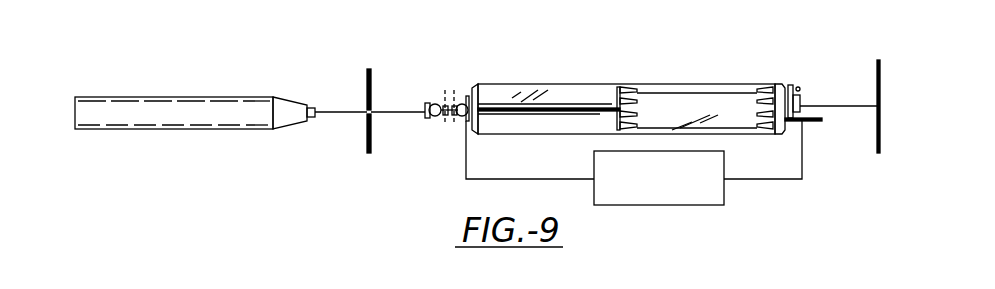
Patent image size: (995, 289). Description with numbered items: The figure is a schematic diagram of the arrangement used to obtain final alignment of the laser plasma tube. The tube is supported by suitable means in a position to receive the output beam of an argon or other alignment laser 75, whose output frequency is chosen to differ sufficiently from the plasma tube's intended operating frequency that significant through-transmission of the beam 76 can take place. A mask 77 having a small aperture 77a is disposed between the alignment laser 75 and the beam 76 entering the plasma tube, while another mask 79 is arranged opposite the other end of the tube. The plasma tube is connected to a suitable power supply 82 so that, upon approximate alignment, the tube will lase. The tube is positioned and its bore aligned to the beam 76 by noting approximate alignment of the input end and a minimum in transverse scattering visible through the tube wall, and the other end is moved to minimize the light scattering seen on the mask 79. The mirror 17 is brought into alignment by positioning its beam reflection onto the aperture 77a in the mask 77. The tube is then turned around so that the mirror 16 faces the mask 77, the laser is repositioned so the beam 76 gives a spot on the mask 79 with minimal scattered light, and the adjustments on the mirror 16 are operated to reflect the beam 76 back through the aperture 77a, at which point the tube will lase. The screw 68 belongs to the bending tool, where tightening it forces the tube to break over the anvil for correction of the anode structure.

The alignment laser 75 is at (243, 97).
The beam 76 is at (337, 115).
The mask 77 is at (371, 70).
The aperture 77a is at (372, 118).
The mirror 17 is at (432, 103).
The screw 68 is at (445, 130).
The mirror 16 is at (803, 97).
The mask 79 is at (877, 147).
The power supply 82 is at (702, 206).